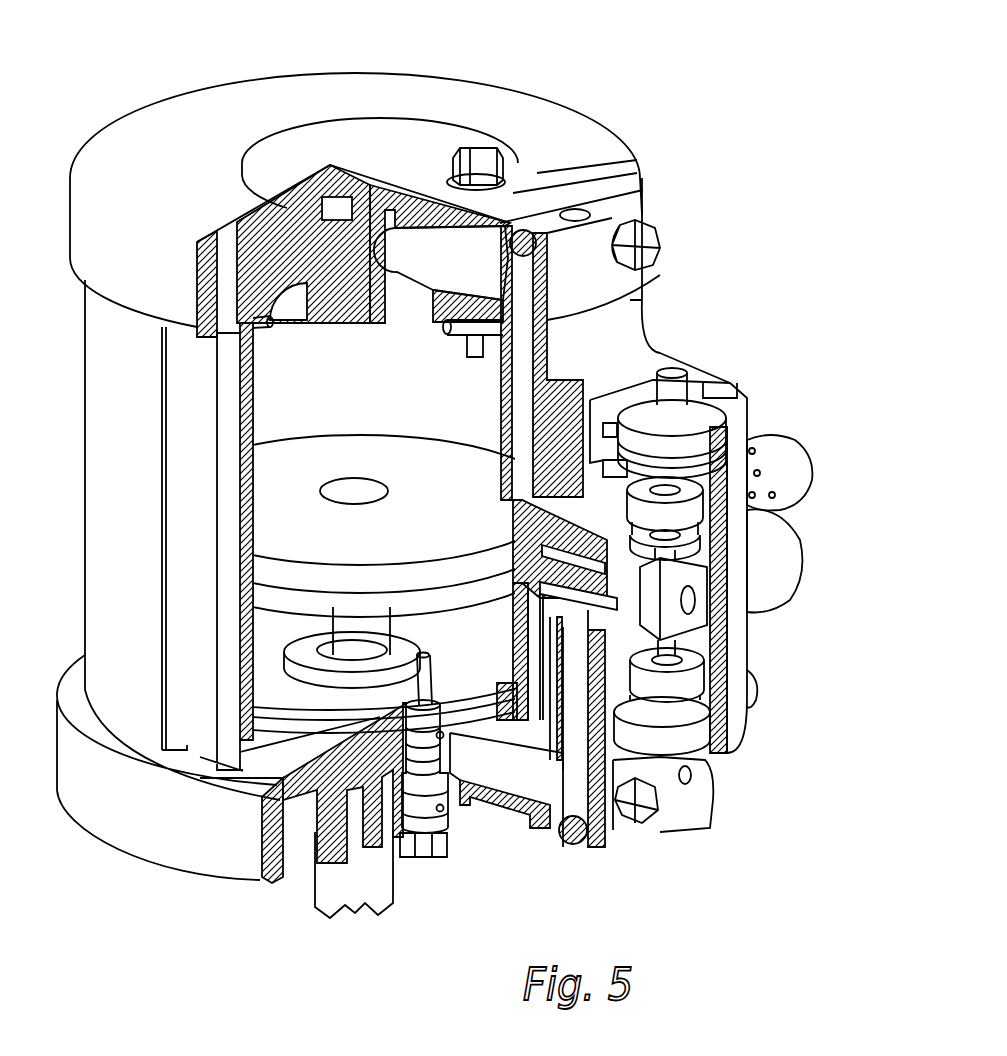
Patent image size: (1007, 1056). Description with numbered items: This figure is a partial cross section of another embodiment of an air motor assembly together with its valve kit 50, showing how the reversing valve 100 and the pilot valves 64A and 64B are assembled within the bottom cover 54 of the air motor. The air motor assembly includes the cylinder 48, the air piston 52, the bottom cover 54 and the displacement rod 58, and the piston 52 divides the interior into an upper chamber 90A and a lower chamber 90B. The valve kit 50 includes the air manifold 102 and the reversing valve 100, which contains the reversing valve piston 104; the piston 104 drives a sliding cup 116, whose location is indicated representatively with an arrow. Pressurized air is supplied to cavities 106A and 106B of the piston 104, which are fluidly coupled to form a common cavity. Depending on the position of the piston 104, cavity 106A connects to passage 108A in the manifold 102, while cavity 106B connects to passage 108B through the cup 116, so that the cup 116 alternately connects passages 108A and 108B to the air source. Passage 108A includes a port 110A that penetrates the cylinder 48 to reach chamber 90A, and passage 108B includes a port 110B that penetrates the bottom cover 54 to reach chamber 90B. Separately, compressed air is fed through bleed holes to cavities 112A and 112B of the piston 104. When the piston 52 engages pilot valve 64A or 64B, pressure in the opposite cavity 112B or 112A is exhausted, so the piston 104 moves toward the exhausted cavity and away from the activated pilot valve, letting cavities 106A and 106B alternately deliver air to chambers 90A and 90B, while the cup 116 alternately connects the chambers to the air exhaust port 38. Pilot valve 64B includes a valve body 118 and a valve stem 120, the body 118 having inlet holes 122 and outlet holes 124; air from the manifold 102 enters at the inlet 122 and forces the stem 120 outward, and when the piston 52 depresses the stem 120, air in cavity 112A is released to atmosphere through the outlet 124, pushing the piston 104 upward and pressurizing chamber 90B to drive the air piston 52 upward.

The air exhaust port 38 is at (790, 467).
The cylinder 48 is at (185, 169).
The valve kit 50 is at (679, 360).
The air piston 52 is at (297, 491).
The bottom cover 54 is at (140, 838).
The displacement rod 58 is at (368, 644).
The pilot valve 64A is at (474, 147).
The pilot valve 64B is at (445, 790).
The chamber 90A is at (438, 389).
The chamber 90B is at (295, 634).
The reversing valve 100 is at (730, 437).
The air manifold 102 is at (603, 203).
The reversing valve piston 104 is at (690, 630).
The cavity 106A is at (687, 537).
The cavity 106B is at (693, 690).
The passage 108A is at (637, 303).
The passage 108B is at (577, 797).
The port 110A is at (450, 253).
The port 110B is at (513, 773).
The cavity 112A is at (690, 465).
The cavity 112B is at (668, 732).
The cup 116 is at (560, 558).
The valve body 118 is at (423, 790).
The valve stem 120 is at (430, 682).
The inlet holes 122 is at (446, 810).
The outlet holes 124 is at (444, 735).